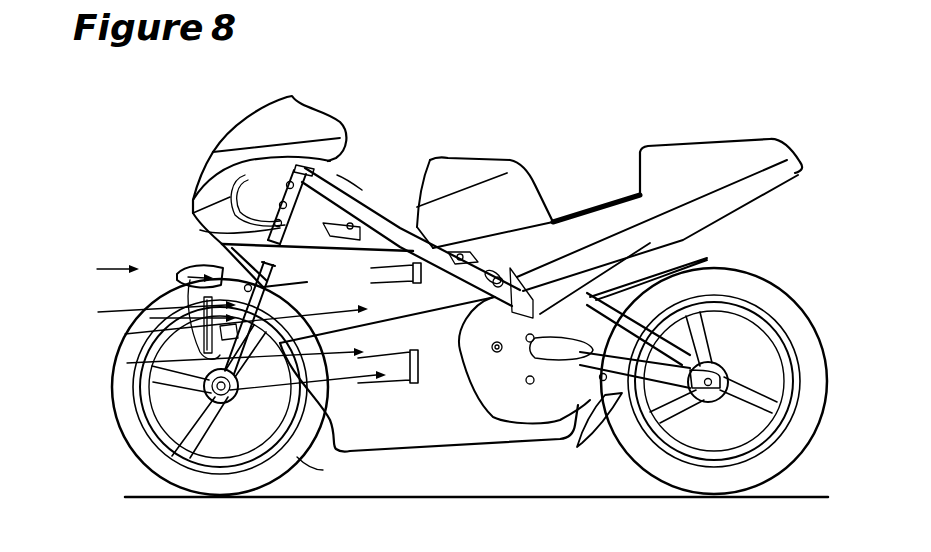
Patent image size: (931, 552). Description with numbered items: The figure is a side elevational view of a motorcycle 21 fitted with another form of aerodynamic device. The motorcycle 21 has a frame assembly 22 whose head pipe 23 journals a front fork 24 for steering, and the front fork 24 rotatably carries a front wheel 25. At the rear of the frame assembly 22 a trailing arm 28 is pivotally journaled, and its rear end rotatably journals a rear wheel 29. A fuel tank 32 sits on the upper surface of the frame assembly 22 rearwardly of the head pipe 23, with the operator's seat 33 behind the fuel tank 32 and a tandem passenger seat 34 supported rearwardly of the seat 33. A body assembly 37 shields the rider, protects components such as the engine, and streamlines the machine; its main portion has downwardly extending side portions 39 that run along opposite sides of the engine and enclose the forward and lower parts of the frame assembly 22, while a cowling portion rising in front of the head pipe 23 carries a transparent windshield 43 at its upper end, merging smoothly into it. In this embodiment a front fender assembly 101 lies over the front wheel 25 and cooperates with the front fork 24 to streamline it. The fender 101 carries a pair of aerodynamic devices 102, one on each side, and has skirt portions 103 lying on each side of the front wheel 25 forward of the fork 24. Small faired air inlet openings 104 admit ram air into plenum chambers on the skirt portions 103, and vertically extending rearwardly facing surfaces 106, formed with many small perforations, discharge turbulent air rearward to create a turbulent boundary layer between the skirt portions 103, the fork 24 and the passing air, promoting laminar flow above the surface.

The motorcycle 21 is at (518, 128).
The frame assembly 22 is at (406, 225).
The head pipe 23 is at (282, 216).
The front fork 24 is at (247, 275).
The front wheel 25 is at (216, 407).
The trailing arm 28 is at (578, 425).
The rear wheel 29 is at (748, 277).
The fuel tank 32 is at (443, 170).
The seat 33 is at (606, 198).
The tandem passenger seat 34 is at (698, 140).
The body assembly 37 is at (184, 171).
The side portions 39 is at (393, 333).
The windshield 43 is at (271, 125).
The front fender assembly 101 is at (203, 263).
The aerodynamic devices 102 is at (118, 255).
The skirt portions 103 is at (127, 363).
The air inlet openings 104 is at (143, 315).
The rearwardly facing surfaces 106 is at (125, 334).